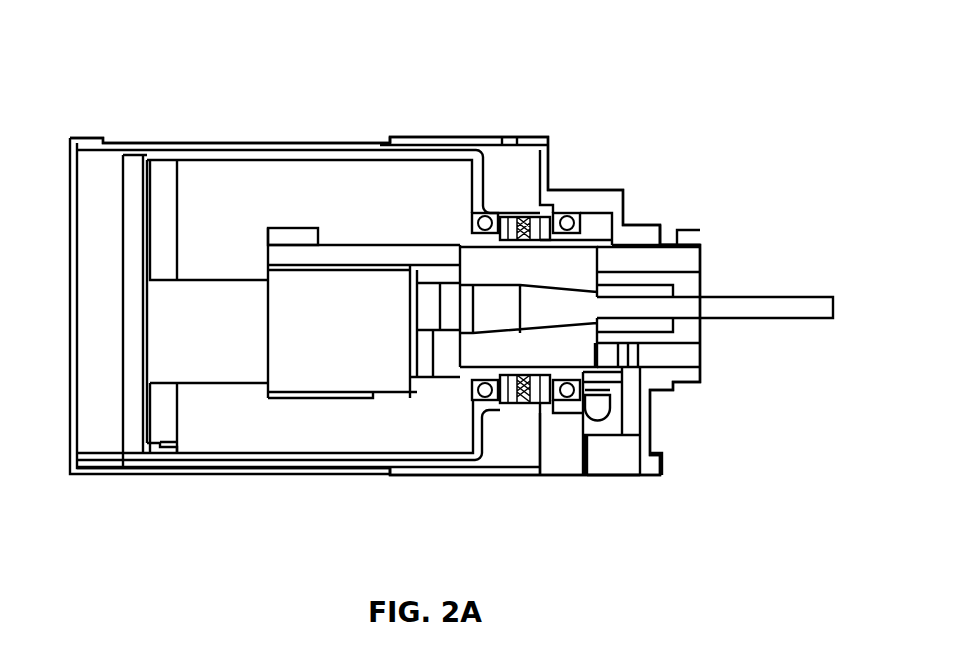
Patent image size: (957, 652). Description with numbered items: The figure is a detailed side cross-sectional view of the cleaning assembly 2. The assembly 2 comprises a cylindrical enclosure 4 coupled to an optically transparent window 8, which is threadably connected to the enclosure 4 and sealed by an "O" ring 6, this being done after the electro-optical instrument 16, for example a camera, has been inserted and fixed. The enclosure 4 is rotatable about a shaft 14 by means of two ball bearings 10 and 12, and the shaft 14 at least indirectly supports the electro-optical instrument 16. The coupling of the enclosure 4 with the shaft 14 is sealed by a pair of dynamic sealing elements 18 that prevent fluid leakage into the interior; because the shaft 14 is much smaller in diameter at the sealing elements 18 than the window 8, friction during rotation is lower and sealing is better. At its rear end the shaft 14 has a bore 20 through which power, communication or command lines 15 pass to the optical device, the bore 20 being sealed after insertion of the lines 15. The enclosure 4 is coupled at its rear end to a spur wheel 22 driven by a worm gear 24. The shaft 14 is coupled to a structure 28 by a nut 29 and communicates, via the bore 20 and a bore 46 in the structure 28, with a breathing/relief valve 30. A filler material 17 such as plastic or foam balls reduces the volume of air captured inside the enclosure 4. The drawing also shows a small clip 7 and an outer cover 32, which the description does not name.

The assembly 2 is at (498, 86).
The cylindrical enclosure 4 is at (285, 153).
The "O" ring 6 is at (150, 167).
The retaining clip 7 is at (180, 440).
The optically transparent window 8 is at (132, 192).
The ball bearing 10 is at (487, 220).
The ball bearing 12 is at (567, 223).
The shaft 14 is at (365, 237).
The power and/or communication and/or command lines 15 is at (783, 310).
The electro-optical instrument 16 is at (310, 340).
The filler material 17 is at (373, 420).
The dynamic sealing elements 18 is at (533, 403).
The bore 20 is at (652, 290).
The spur wheel 22 is at (598, 230).
The worm gear 24 is at (598, 410).
The structure 28 is at (567, 455).
The nut 29 is at (668, 240).
The breathing/relief valve 30 is at (613, 462).
The outer cover 32 is at (207, 143).
The bore 46 is at (630, 403).